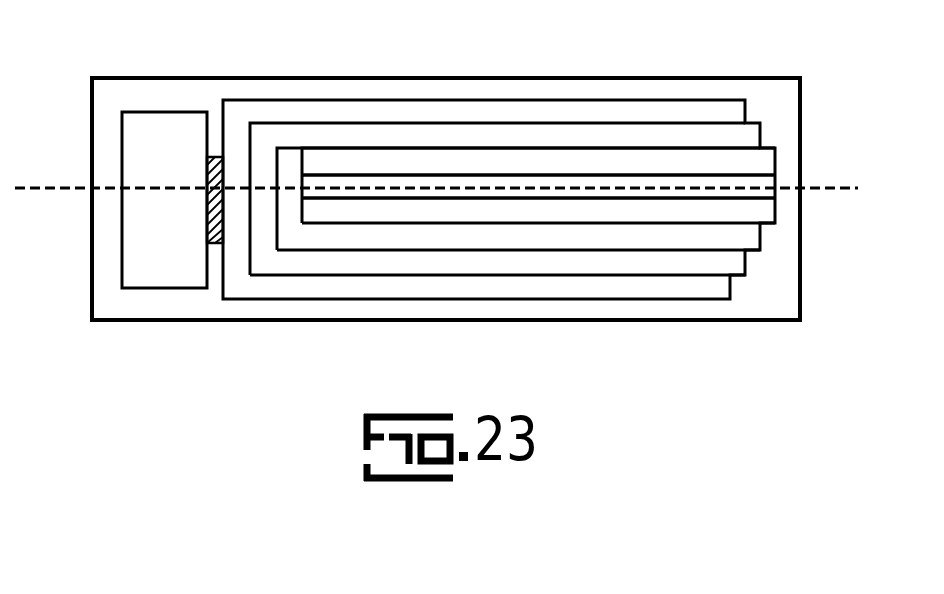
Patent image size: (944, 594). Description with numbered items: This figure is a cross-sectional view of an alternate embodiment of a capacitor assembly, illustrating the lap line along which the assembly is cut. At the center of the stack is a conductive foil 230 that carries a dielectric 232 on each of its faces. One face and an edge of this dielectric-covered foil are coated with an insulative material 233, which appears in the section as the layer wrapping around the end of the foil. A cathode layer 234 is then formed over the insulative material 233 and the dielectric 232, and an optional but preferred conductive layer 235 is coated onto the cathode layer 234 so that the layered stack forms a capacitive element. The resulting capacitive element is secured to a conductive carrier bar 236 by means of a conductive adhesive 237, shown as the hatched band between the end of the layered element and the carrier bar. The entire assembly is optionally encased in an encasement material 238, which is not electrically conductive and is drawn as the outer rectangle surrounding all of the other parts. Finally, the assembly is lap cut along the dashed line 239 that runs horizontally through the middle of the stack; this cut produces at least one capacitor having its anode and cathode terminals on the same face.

The conductive foil 230 is at (774, 176).
The dielectric 232 is at (770, 153).
The insulative material 233 is at (762, 236).
The cathode layer 234 is at (748, 266).
The conductive layer 235 is at (712, 298).
The conductive carrier bar 236 is at (122, 247).
The conductive adhesive 237 is at (214, 245).
The encasement material 238 is at (645, 86).
The lap cut line 239 is at (55, 186).